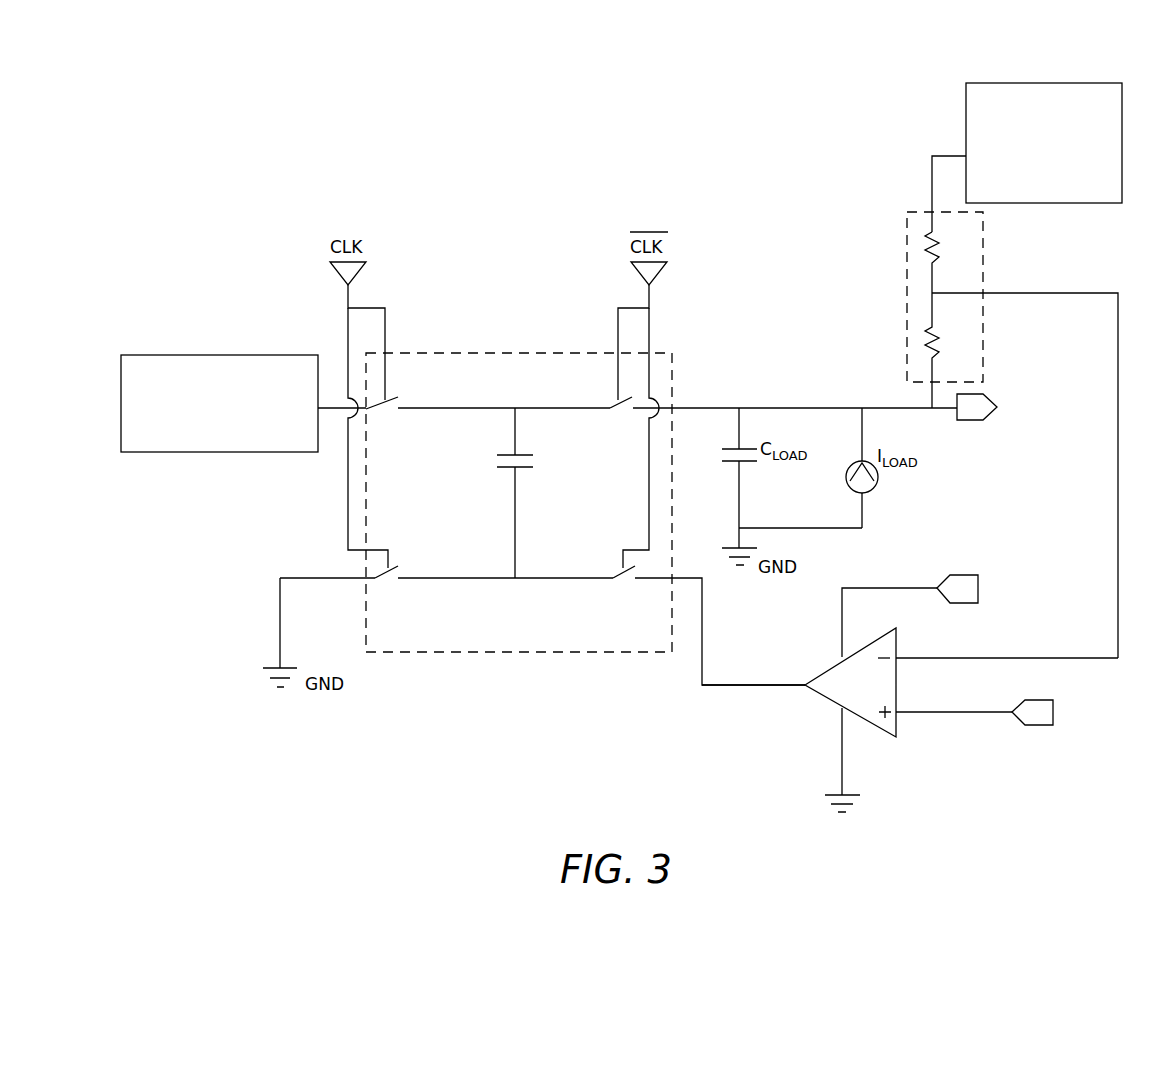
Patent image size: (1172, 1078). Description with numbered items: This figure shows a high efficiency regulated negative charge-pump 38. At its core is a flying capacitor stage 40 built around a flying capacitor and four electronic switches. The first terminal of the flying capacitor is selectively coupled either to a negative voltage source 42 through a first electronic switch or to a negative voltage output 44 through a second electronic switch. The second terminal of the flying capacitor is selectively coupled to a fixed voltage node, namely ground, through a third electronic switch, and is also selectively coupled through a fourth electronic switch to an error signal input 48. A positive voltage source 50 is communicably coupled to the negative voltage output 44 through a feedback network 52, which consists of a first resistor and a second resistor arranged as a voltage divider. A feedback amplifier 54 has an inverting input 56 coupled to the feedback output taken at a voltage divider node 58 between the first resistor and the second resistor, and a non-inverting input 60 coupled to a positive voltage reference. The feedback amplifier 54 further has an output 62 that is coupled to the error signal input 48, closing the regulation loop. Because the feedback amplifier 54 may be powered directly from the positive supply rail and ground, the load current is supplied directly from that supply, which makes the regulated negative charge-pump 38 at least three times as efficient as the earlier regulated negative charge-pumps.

The high efficiency regulated negative charge-pump 38 is at (746, 182).
The flying capacitor stage 40 is at (640, 644).
The negative voltage source 42 is at (234, 428).
The negative voltage output 44 is at (967, 420).
The error signal input 48 is at (677, 578).
The positive voltage source 50 is at (1033, 192).
The feedback network 52 is at (913, 212).
The feedback amplifier 54 is at (874, 692).
The inverting input 56 is at (948, 658).
The voltage divider node 58 is at (932, 293).
The non-inverting input 60 is at (948, 712).
The output 62 is at (730, 685).